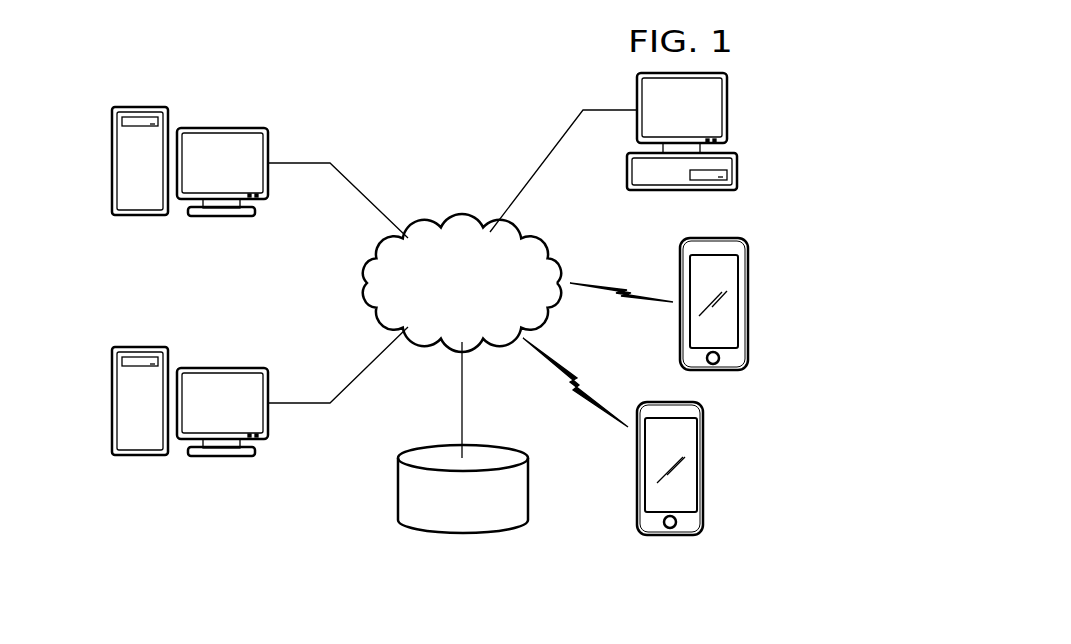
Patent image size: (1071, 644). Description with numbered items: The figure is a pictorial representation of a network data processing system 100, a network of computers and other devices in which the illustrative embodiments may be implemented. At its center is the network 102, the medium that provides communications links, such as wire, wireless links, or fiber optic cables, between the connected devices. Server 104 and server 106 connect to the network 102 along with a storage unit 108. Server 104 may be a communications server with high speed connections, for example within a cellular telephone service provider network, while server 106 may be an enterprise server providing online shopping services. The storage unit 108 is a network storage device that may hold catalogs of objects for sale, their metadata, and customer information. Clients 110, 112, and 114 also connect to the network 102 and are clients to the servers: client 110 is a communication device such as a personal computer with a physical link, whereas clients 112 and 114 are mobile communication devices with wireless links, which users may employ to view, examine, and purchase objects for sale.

The network data processing system 100 is at (334, 78).
The network 102 is at (455, 223).
The server 104 is at (112, 160).
The server 106 is at (112, 400).
The storage unit 108 is at (397, 490).
The client 110 is at (737, 172).
The client 112 is at (748, 303).
The client 114 is at (703, 468).